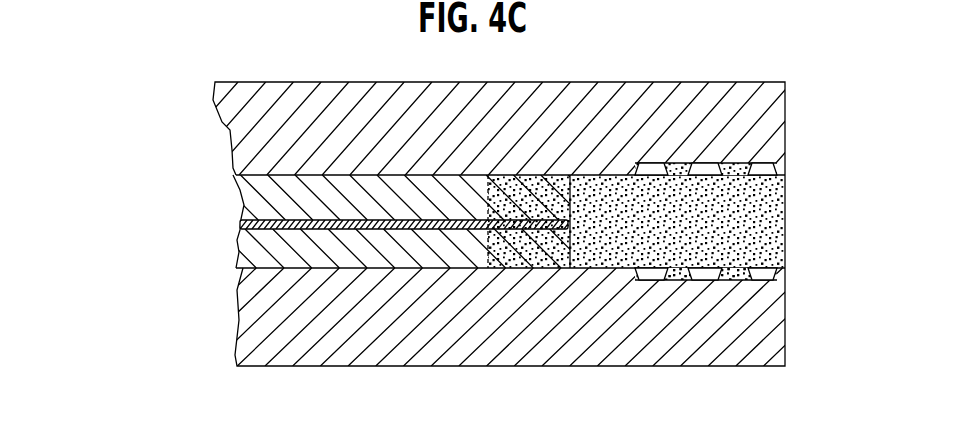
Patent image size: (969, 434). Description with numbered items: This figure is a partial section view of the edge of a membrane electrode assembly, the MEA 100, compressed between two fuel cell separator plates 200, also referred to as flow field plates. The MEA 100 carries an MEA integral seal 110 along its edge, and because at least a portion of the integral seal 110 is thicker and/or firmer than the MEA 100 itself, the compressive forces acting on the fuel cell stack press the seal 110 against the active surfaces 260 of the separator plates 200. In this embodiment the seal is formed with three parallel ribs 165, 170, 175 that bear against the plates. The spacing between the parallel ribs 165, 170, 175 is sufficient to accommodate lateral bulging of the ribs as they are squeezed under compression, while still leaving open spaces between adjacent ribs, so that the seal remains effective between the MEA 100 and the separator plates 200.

The MEA 100 is at (224, 176).
The MEA integral seal 110 is at (806, 217).
The parallel rib 165 is at (678, 273).
The parallel rib 170 is at (715, 273).
The parallel rib 175 is at (747, 275).
The fuel cell separator plate 200 is at (368, 160).
The active surface 260 is at (524, 181).